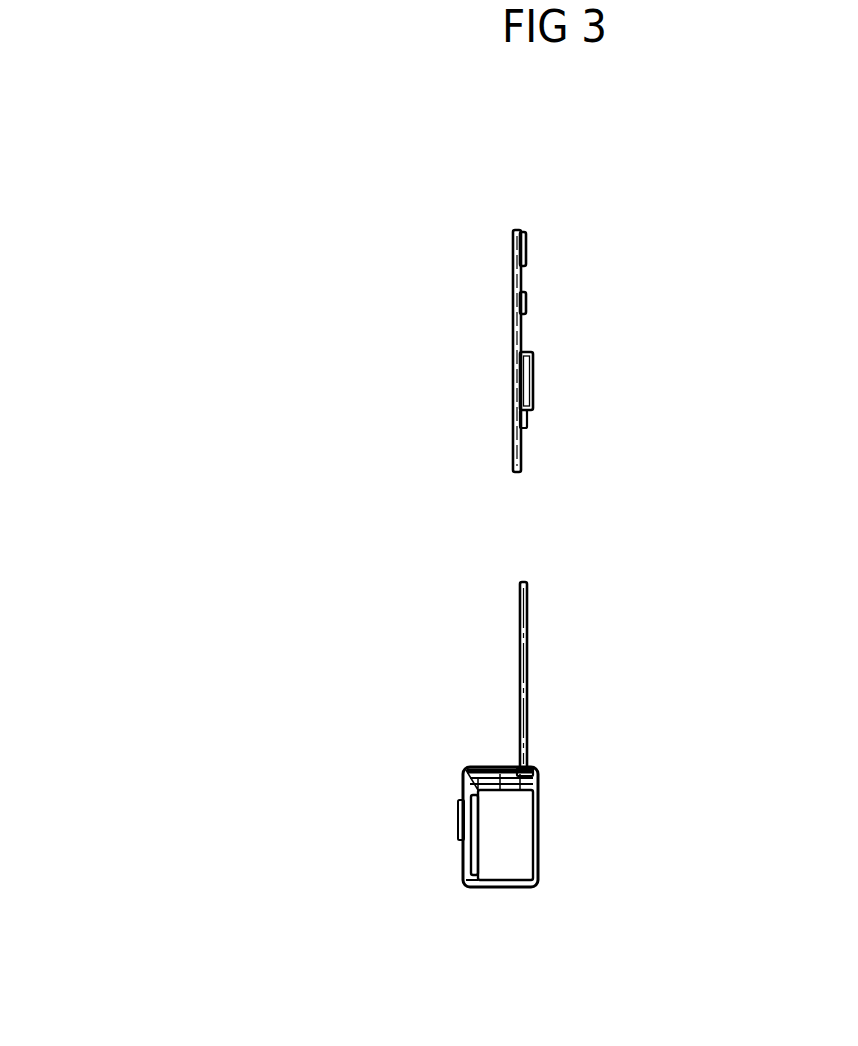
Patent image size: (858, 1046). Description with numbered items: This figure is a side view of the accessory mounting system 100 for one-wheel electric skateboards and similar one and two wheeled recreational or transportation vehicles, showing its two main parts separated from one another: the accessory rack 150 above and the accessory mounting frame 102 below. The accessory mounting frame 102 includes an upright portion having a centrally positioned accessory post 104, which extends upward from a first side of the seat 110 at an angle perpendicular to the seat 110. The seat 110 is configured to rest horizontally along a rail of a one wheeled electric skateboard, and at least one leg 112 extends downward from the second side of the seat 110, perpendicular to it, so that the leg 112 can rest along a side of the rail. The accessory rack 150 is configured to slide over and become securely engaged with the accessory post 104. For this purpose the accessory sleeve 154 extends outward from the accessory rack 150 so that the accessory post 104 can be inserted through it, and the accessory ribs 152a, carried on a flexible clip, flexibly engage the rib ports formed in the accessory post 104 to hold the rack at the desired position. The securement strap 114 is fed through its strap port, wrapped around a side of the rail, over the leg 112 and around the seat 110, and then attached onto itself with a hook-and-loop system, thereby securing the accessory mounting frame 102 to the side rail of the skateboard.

The accessory mounting system 100 is at (462, 544).
The accessory rack 150 is at (405, 217).
The accessory ribs 152a is at (546, 300).
The accessory sleeve 154 is at (549, 377).
The accessory mounting frame 102 is at (380, 574).
The accessory post 104 is at (543, 648).
The seat 110 is at (547, 779).
The securement strap 114 is at (551, 813).
The leg 112 is at (498, 846).